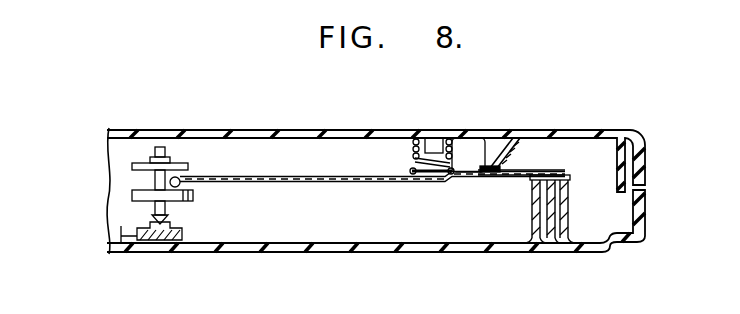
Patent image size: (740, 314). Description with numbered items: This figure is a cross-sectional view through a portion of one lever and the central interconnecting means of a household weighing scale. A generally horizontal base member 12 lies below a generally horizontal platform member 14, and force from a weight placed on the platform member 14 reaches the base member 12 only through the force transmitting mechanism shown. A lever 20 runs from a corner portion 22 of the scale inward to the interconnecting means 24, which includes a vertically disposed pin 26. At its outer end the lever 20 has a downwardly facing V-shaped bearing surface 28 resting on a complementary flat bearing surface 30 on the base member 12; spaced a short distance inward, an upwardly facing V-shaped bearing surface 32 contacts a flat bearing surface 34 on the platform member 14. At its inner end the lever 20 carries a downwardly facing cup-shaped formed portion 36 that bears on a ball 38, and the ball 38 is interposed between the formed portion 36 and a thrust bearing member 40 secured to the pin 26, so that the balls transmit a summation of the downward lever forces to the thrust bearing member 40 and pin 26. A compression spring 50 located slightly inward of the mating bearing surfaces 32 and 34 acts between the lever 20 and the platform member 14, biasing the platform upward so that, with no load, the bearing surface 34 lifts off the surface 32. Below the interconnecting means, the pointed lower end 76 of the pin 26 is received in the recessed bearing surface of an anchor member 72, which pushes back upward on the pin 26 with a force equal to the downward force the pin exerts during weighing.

The base member 12 is at (376, 244).
The platform member 14 is at (513, 131).
The lever 20 is at (384, 183).
The corner portion 22 is at (587, 184).
The interconnecting means 24 is at (131, 190).
The pin 26 is at (152, 206).
The V-shaped bearing surface 28 is at (548, 168).
The flat bearing surface 30 is at (572, 181).
The V-shaped bearing surface 32 is at (497, 183).
The flat bearing surface 34 is at (510, 176).
The cup-shaped formed portion 36 is at (190, 171).
The ball 38 is at (182, 182).
The thrust bearing member 40 is at (132, 196).
The compression spring 50 is at (415, 160).
The anchor member 72 is at (128, 240).
The pointed lower end 76 is at (192, 219).